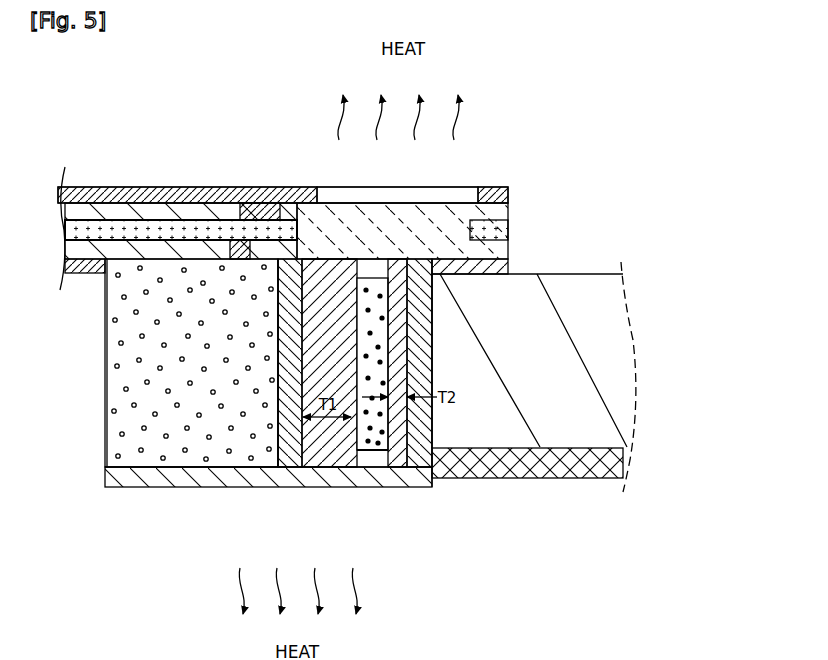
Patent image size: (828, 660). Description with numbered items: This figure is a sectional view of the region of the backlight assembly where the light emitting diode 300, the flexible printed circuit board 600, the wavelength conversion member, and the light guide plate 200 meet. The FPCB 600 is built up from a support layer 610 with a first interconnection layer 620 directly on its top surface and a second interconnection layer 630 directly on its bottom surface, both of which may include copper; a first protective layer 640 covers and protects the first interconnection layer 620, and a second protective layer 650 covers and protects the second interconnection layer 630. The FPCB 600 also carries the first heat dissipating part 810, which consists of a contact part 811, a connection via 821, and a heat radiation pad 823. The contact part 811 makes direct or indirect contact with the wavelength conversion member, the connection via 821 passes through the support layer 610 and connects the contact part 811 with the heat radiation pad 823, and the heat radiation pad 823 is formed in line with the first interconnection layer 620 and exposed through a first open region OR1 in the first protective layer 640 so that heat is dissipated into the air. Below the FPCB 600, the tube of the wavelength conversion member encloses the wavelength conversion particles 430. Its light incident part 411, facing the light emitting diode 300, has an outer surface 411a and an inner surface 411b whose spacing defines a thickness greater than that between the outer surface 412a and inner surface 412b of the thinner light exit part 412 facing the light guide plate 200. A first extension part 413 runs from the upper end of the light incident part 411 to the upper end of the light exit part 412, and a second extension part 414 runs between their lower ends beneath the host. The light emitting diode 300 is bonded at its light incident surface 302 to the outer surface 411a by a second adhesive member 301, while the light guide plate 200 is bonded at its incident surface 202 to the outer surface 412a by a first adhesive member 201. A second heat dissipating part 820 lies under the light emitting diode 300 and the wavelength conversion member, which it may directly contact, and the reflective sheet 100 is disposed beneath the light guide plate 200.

The flexible printed circuit board 600 is at (237, 128).
The support layer 610 is at (188, 229).
The first interconnection layer 620 is at (153, 211).
The second interconnection layer 630 is at (203, 252).
The first protective layer 640 is at (118, 219).
The second protective layer 650 is at (88, 268).
The first heat dissipating part 810 is at (569, 195).
The contact part 811 is at (420, 252).
The connection via 821 is at (423, 232).
The heat radiation pad 823 is at (423, 212).
The first open region OR1 is at (462, 193).
The light incident part 411 is at (318, 440).
The outer surface of light incident part 411a is at (290, 333).
The inner surface of light incident part 411b is at (350, 333).
The first extension part 413 is at (369, 275).
The wavelength conversion particles 430 is at (365, 447).
The second extension part 414 is at (380, 455).
The light exit part 412 is at (412, 440).
The outer surface of light exit part 412a is at (390, 300).
The inner surface of light exit part 412b is at (415, 328).
The light emitting diode 300 is at (130, 426).
The second adhesive member 301 is at (292, 458).
The light incident surface of light emitting diode 302 is at (278, 360).
The second heat dissipating part 820 is at (130, 477).
The light guide plate 200 is at (622, 370).
The first adhesive member 201 is at (432, 370).
The incident surface 202 is at (432, 417).
The reflective sheet 100 is at (622, 468).